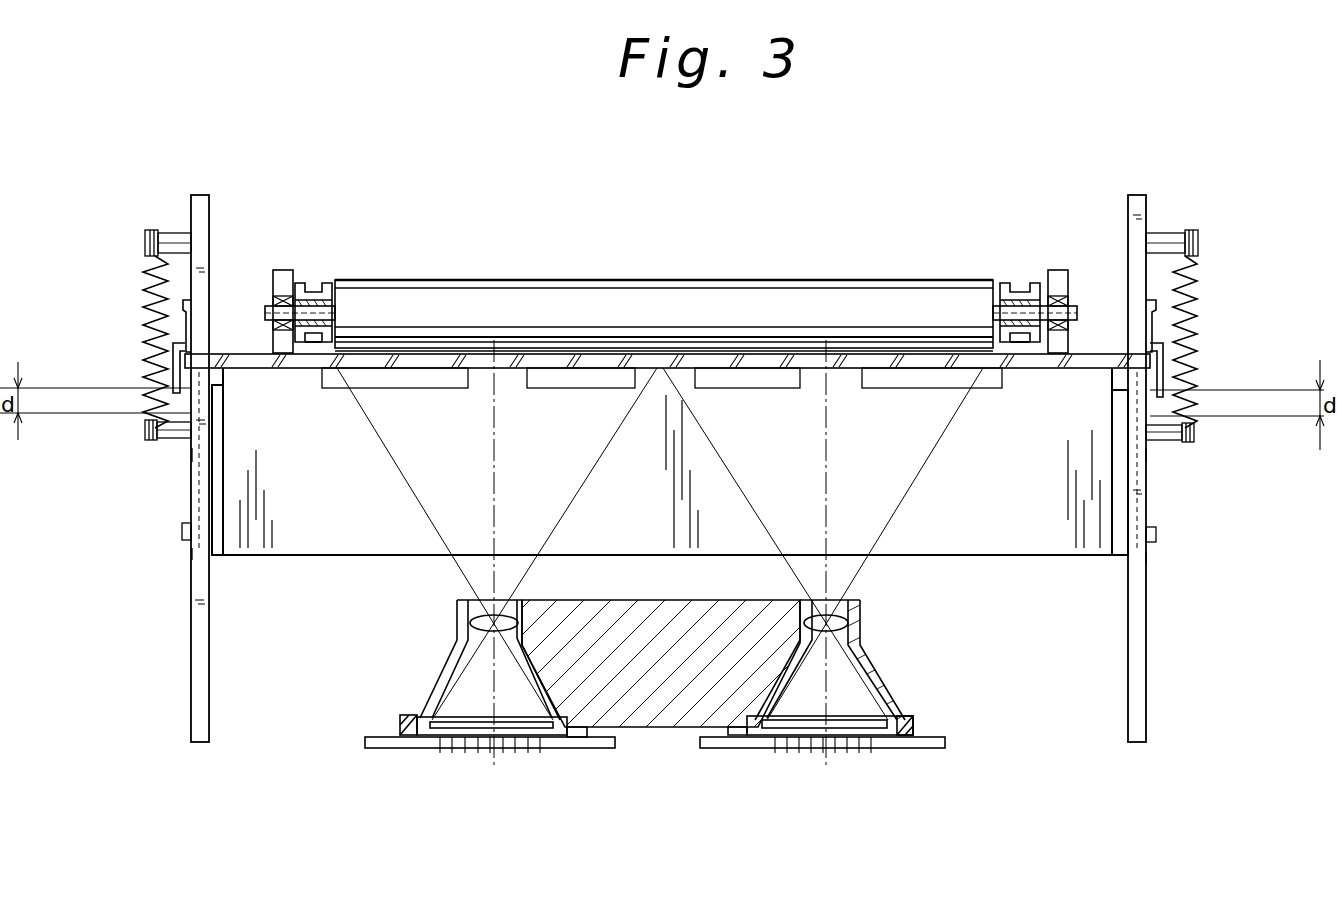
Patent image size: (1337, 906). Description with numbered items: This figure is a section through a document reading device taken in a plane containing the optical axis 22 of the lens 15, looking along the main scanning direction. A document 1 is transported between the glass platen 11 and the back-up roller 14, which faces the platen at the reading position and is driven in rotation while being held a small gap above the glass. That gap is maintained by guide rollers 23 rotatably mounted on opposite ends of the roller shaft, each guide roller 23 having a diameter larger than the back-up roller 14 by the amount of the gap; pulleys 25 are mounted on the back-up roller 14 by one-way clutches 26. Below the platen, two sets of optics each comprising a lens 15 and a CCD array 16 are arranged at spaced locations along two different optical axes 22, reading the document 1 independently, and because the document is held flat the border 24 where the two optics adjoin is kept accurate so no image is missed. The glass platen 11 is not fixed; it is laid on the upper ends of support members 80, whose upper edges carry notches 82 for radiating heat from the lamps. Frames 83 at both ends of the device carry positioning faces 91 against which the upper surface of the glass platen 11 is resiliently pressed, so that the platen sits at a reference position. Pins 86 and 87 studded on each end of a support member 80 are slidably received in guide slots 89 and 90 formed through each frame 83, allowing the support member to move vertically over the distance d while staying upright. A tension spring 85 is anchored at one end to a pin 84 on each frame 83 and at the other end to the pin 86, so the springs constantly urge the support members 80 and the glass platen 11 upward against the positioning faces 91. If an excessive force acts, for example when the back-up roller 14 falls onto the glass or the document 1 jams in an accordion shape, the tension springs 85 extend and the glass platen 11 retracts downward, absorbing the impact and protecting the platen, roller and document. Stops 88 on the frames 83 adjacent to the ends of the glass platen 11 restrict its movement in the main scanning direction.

The document 1 is at (775, 384).
The glass platen 11 is at (768, 370).
The back-up roller 14 is at (870, 282).
The lens 15 is at (472, 622).
The CCD array 16 is at (468, 720).
The optical axis 22 is at (497, 462).
The guide roller 23 is at (283, 272).
The border 24 is at (665, 362).
The pulley 25 is at (318, 292).
The one-way clutch 26 is at (316, 343).
The support member 80 is at (1025, 557).
The notch 82 is at (418, 386).
The frame 83 is at (207, 195).
The pin 84 is at (146, 243).
The tension spring 85 is at (145, 303).
The pin 86 is at (145, 430).
The pin 87 is at (182, 531).
The stop 88 is at (172, 368).
The guide slot 89 is at (192, 455).
The guide slot 90 is at (192, 553).
The positioning face 91 is at (204, 352).